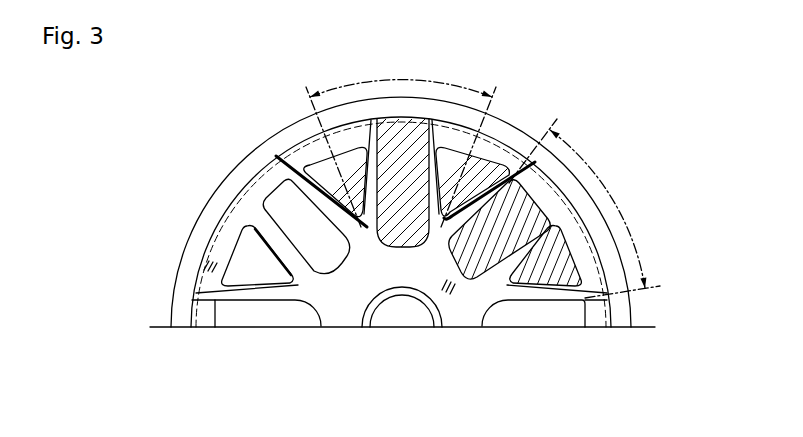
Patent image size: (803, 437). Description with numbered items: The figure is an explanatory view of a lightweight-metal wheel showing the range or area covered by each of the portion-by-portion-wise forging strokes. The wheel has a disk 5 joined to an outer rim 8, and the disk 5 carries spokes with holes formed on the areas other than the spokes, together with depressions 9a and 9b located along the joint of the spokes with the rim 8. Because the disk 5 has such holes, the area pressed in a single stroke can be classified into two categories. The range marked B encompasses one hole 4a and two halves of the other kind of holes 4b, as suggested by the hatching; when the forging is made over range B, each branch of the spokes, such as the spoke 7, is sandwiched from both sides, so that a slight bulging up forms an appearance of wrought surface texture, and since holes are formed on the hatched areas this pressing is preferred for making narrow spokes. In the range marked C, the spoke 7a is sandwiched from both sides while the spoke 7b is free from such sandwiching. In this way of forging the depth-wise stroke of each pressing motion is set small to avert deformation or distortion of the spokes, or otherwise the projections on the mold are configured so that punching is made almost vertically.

The rim 8 is at (284, 134).
The disk 5 is at (448, 292).
The hole 4a is at (292, 206).
The hole 4b is at (256, 256).
The depression 9a is at (206, 312).
The depression 9b is at (202, 270).
The spoke 7 is at (305, 287).
The spoke 7a is at (494, 292).
The spoke 7b is at (476, 195).
The pressing range B is at (401, 140).
The pressing range C is at (584, 208).